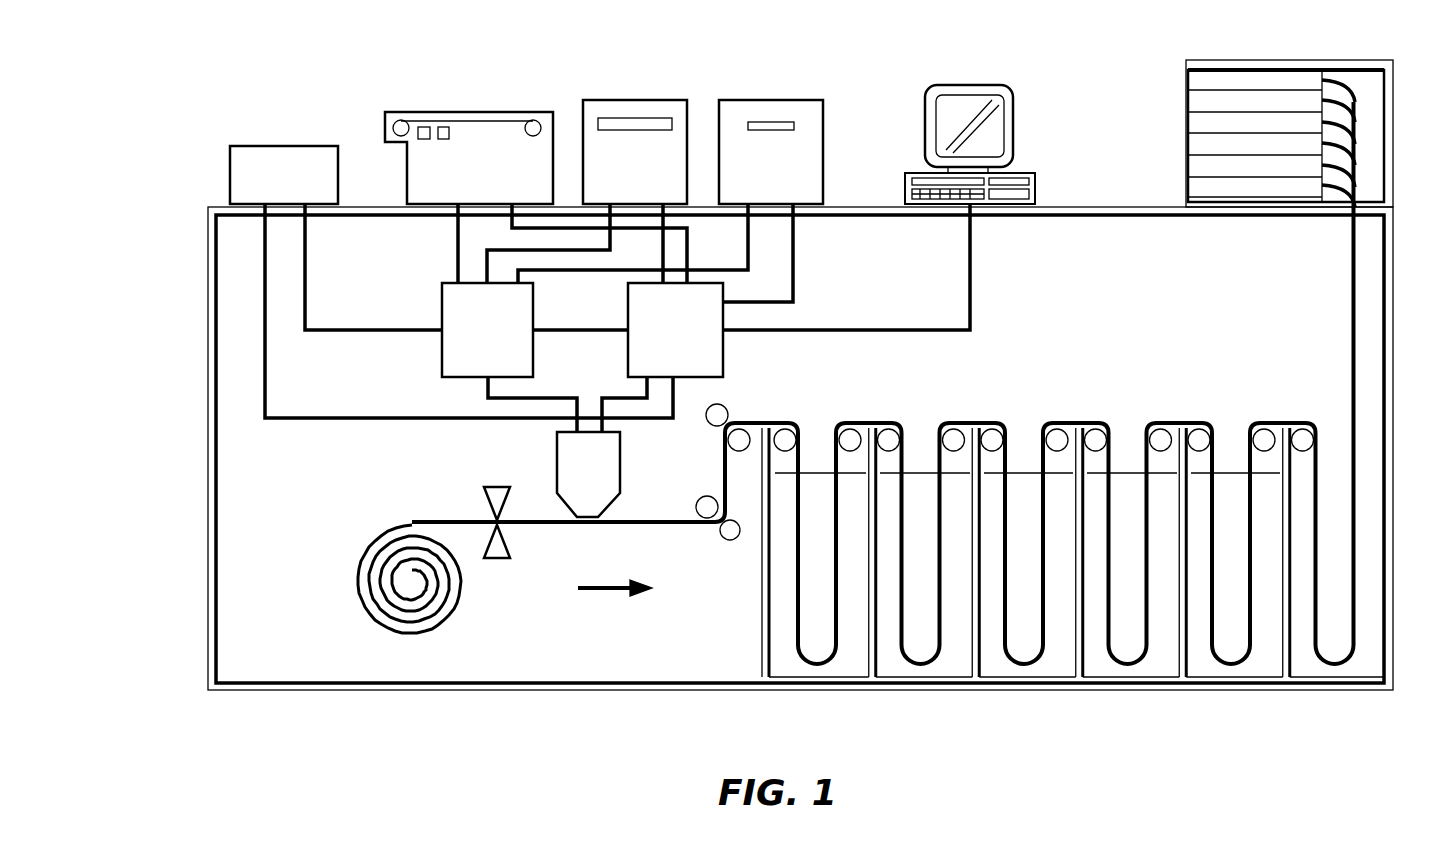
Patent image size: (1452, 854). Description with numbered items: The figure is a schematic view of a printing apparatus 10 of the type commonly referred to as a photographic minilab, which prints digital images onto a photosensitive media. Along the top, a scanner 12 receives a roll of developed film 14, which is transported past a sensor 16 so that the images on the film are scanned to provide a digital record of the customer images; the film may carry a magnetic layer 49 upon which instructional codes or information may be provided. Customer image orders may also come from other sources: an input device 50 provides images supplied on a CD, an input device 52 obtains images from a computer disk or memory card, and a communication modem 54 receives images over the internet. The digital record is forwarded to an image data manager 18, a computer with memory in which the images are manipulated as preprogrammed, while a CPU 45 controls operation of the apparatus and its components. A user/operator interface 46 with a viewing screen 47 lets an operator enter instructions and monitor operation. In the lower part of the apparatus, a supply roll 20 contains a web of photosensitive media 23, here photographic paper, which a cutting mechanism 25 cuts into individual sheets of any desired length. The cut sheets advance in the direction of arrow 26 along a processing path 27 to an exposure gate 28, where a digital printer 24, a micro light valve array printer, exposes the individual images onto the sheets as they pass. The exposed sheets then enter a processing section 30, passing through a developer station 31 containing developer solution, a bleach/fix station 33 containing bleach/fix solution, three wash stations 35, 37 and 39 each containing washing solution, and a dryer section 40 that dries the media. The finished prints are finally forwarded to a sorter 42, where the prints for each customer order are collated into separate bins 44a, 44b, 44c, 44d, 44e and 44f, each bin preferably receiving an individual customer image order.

The apparatus 10 is at (190, 501).
The scanner 12 is at (469, 121).
The roll of developed film 14 is at (400, 120).
The sensor 16 is at (425, 127).
The magnetic layer 49 is at (444, 127).
The communication modem 54 is at (283, 146).
The input device 50 is at (630, 100).
The input device 52 is at (760, 100).
The viewing screen 47 is at (968, 85).
The user/operator interface 46 is at (1037, 173).
The sorter 42 is at (1278, 127).
The bin 44a is at (1188, 80).
The bin 44b is at (1188, 101).
The bin 44c is at (1188, 122).
The bin 44d is at (1188, 144).
The bin 44e is at (1188, 166).
The bin 44f is at (1188, 187).
The image data manager 18 is at (442, 305).
The CPU 45 is at (723, 360).
The digital printer 24 is at (620, 448).
The cutting mechanism 25 is at (495, 487).
The supply roll 20 is at (358, 548).
The web of photosensitive media 23 is at (420, 522).
The processing path 27 is at (656, 522).
The exposure gate 28 is at (586, 530).
The arrow 26 is at (596, 600).
The processing section 30 is at (1155, 352).
The developer station 31 is at (832, 668).
The bleach/fix station 33 is at (936, 668).
The wash station 35 is at (1040, 668).
The wash station 37 is at (1144, 668).
The wash station 39 is at (1247, 668).
The dryer section 40 is at (1364, 668).